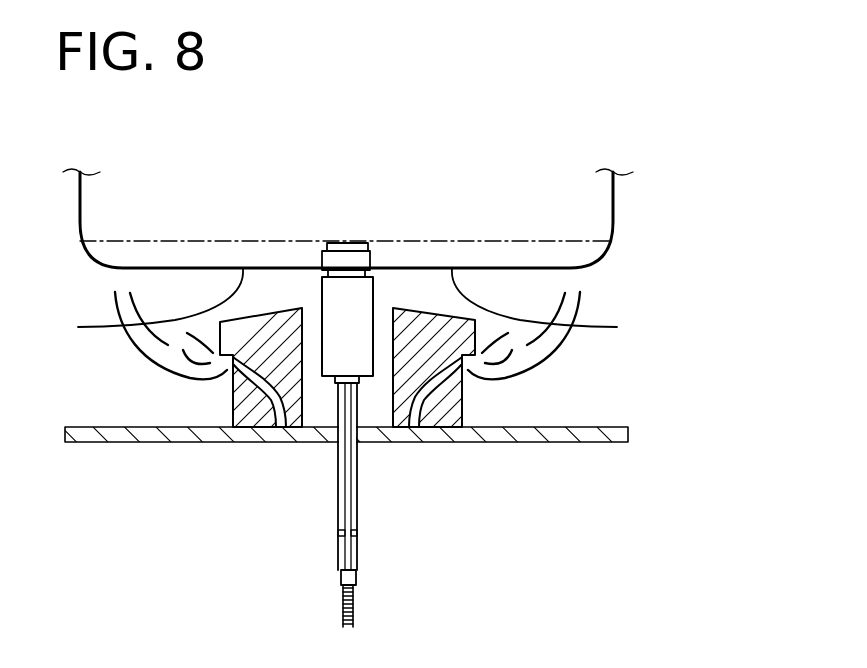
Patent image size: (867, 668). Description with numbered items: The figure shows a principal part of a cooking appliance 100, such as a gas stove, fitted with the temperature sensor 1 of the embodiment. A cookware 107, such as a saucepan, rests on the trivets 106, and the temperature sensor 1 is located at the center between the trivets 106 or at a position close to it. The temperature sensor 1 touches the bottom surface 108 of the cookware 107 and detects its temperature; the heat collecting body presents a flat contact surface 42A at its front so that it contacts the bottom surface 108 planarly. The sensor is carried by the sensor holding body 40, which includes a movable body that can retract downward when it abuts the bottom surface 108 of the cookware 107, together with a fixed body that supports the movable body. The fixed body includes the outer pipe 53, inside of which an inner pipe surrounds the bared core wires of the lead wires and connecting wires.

The temperature sensor 1 is at (362, 281).
The sensor holding body 40 is at (377, 297).
The contact surface 42A is at (355, 270).
The outer pipe 53 is at (337, 522).
The cooking appliance 100 is at (670, 373).
The trivets 106 is at (112, 327).
The cookware 107 is at (617, 202).
The bottom surface 108 is at (437, 271).